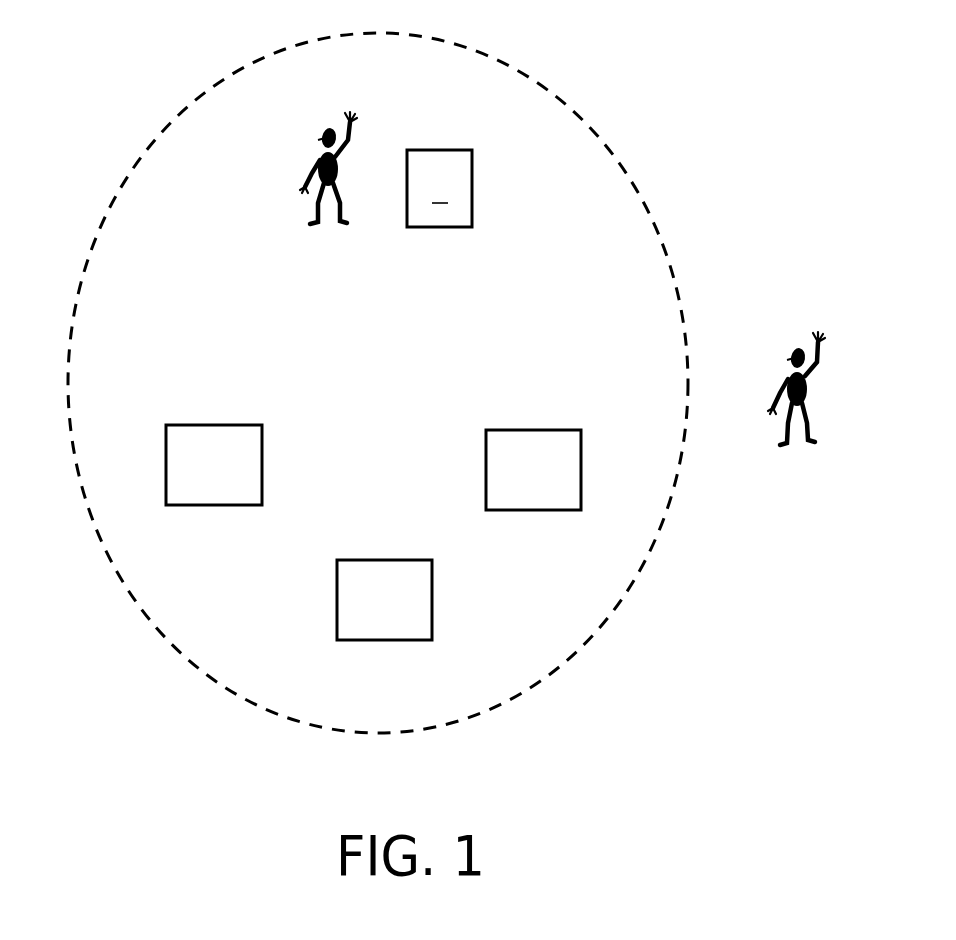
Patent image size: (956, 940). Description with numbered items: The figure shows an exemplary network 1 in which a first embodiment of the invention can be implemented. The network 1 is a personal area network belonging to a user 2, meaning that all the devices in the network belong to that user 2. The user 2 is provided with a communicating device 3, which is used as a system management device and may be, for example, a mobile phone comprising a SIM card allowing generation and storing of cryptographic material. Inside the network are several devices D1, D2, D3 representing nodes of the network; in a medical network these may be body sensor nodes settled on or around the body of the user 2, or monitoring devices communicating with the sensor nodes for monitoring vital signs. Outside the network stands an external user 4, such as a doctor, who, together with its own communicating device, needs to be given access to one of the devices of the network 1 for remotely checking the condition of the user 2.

The network 1 is at (524, 73).
The user 2 is at (323, 131).
The communicating device 3 is at (439, 188).
The external user 4 is at (793, 351).
The device D1 is at (214, 465).
The device D2 is at (533, 470).
The device D3 is at (384, 600).